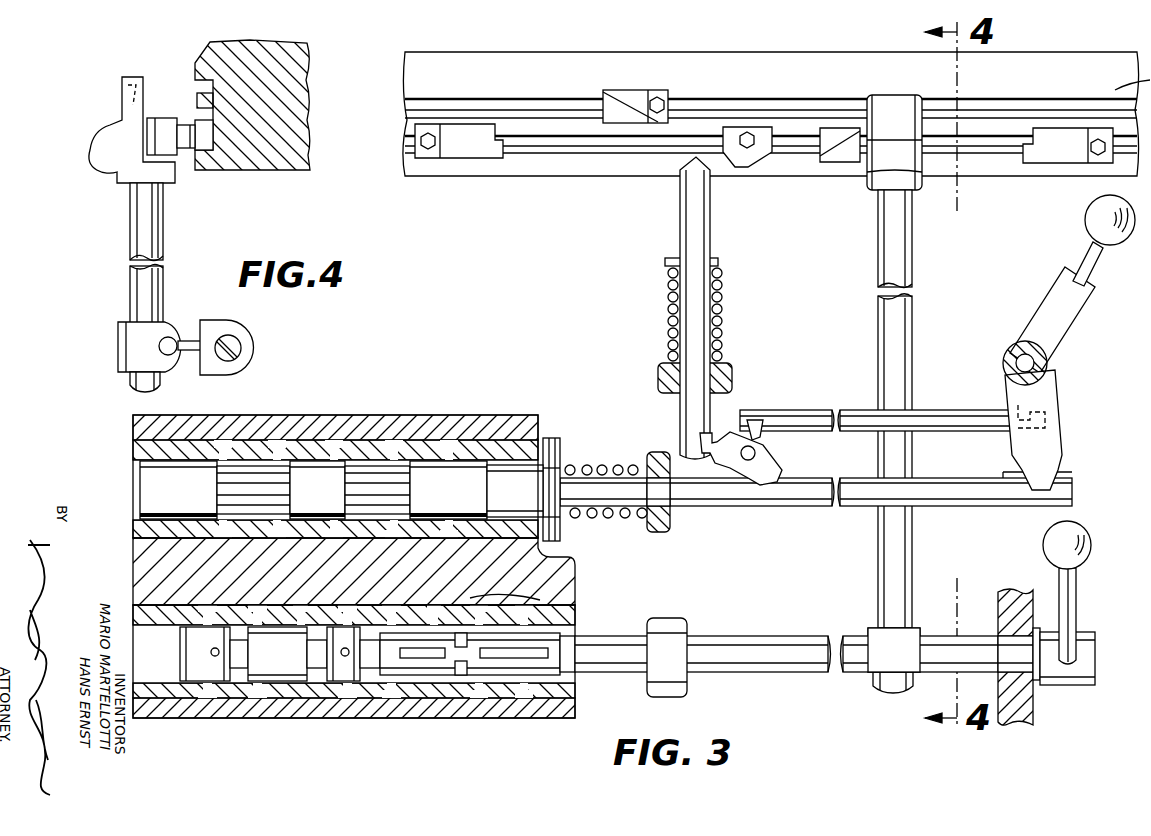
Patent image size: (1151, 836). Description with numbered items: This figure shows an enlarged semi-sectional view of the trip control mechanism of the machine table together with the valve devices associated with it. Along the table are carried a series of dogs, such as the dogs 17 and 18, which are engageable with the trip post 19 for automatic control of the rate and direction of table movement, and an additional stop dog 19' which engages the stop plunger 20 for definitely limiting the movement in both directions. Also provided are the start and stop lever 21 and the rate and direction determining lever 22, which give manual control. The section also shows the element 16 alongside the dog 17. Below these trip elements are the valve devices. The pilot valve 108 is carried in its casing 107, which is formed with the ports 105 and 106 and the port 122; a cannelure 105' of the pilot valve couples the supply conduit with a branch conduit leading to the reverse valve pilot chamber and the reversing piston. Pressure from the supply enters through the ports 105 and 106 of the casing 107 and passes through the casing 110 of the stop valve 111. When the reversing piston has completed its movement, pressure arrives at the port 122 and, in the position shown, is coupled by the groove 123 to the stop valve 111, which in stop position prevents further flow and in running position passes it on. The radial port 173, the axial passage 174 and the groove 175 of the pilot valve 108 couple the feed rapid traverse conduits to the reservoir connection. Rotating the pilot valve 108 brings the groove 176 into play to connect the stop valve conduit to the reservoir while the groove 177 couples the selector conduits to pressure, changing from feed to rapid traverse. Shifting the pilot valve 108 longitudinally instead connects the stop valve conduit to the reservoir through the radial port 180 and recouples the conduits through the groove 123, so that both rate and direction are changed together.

In FIG. 4, the bed or frame member (hatched) 16 is at (313, 108).
In FIG. 4, the dog 17 is at (185, 158).
In FIG. 3, the dog 17 is at (640, 120).
In FIG. 3, the dog 18 is at (465, 158).
In FIG. 4, the trip post 19 is at (152, 234).
In FIG. 3, the trip post 19 is at (871, 394).
In FIG. 3, the stop dog 19' is at (760, 172).
In FIG. 3, the stop plunger 20 is at (705, 225).
In FIG. 3, the start and stop lever 21 is at (1045, 312).
In FIG. 3, the rate and direction determining lever 22 is at (1060, 578).
In FIG. 3, the port 105 is at (188, 686).
In FIG. 3, the cannelure 105' is at (295, 704).
In FIG. 3, the port 106 is at (250, 682).
In FIG. 3, the casing 107 is at (515, 712).
In FIG. 3, the pilot valve 108 is at (630, 650).
In FIG. 3, the casing 110 is at (520, 545).
In FIG. 3, the stop valve 111 is at (533, 480).
In FIG. 3, the port 122 is at (440, 690).
In FIG. 3, the groove 123 is at (525, 592).
In FIG. 3, the radial port 173 is at (375, 690).
In FIG. 3, the axial passage 174 is at (560, 580).
In FIG. 3, the groove 175 is at (340, 684).
In FIG. 3, the groove 176 is at (480, 690).
In FIG. 3, the groove 177 is at (420, 688).
In FIG. 3, the radial port 180 is at (575, 612).